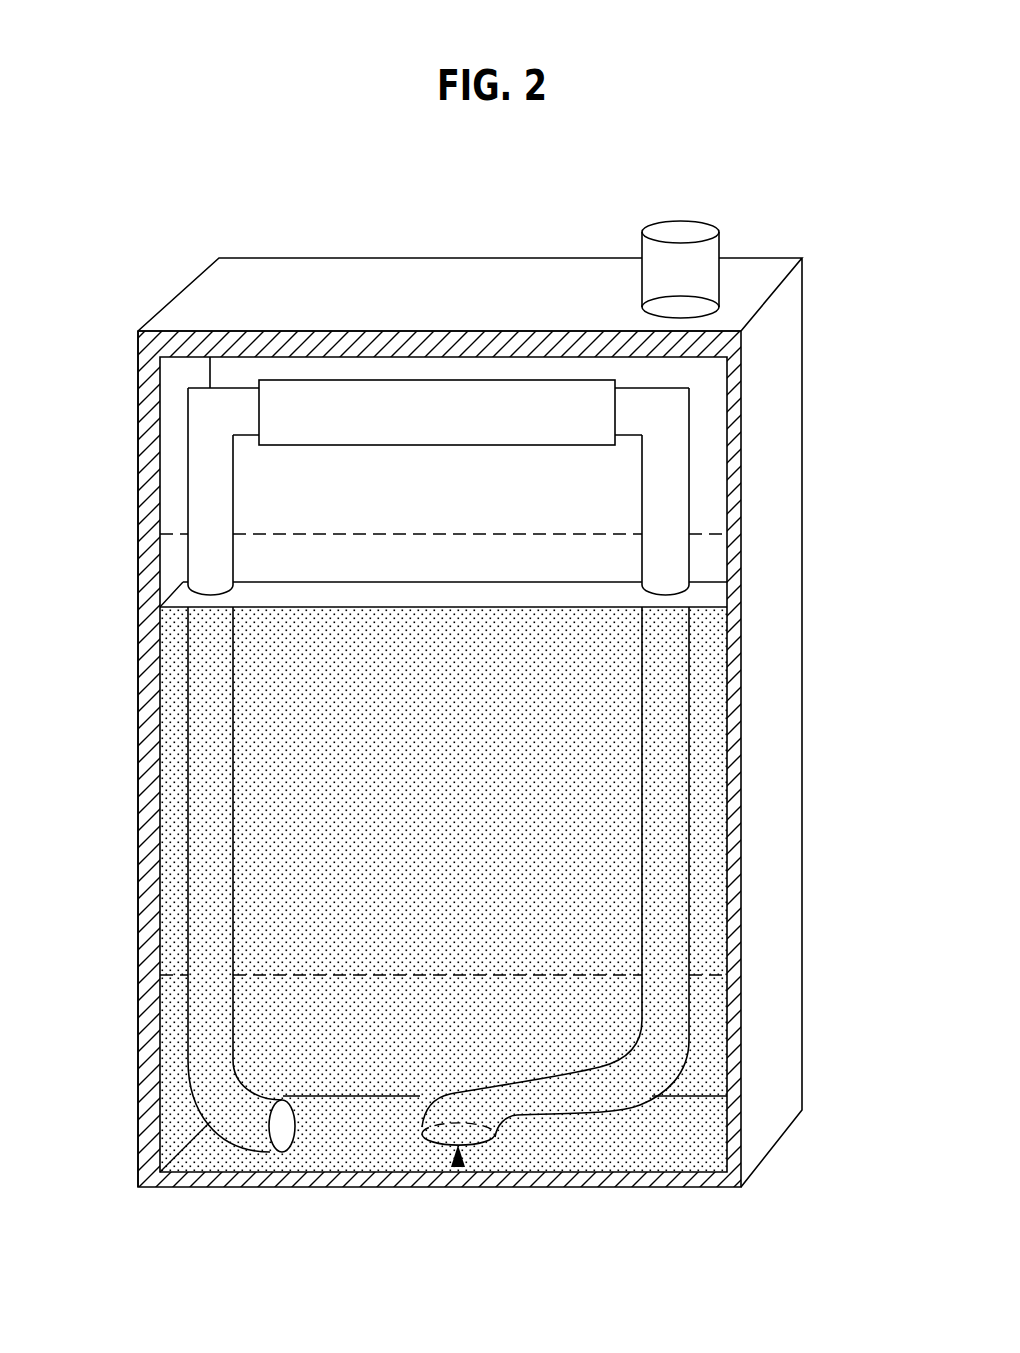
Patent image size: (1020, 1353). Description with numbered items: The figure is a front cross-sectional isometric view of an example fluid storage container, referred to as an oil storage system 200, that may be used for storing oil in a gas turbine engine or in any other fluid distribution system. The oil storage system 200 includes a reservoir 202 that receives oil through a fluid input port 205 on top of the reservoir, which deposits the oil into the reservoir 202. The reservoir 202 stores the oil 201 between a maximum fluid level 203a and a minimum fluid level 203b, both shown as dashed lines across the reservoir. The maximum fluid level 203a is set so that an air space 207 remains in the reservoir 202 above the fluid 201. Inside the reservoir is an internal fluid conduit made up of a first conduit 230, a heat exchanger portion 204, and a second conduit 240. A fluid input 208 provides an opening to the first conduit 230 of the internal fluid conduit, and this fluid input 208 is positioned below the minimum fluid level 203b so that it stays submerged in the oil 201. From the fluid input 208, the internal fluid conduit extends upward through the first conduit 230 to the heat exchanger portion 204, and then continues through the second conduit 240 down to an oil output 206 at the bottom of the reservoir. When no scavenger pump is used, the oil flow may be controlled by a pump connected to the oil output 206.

The oil storage system 200 is at (273, 195).
The oil 201 is at (488, 588).
The reservoir 202 is at (398, 258).
The maximum fluid level 203a is at (465, 530).
The minimum fluid level 203b is at (268, 973).
The heat exchanger portion 204 is at (377, 445).
The fluid input port 205 is at (677, 237).
The oil output 206 is at (458, 1167).
The air space 207 is at (265, 472).
The fluid input 208 is at (277, 1127).
The first conduit 230 is at (274, 801).
The second conduit 240 is at (653, 810).